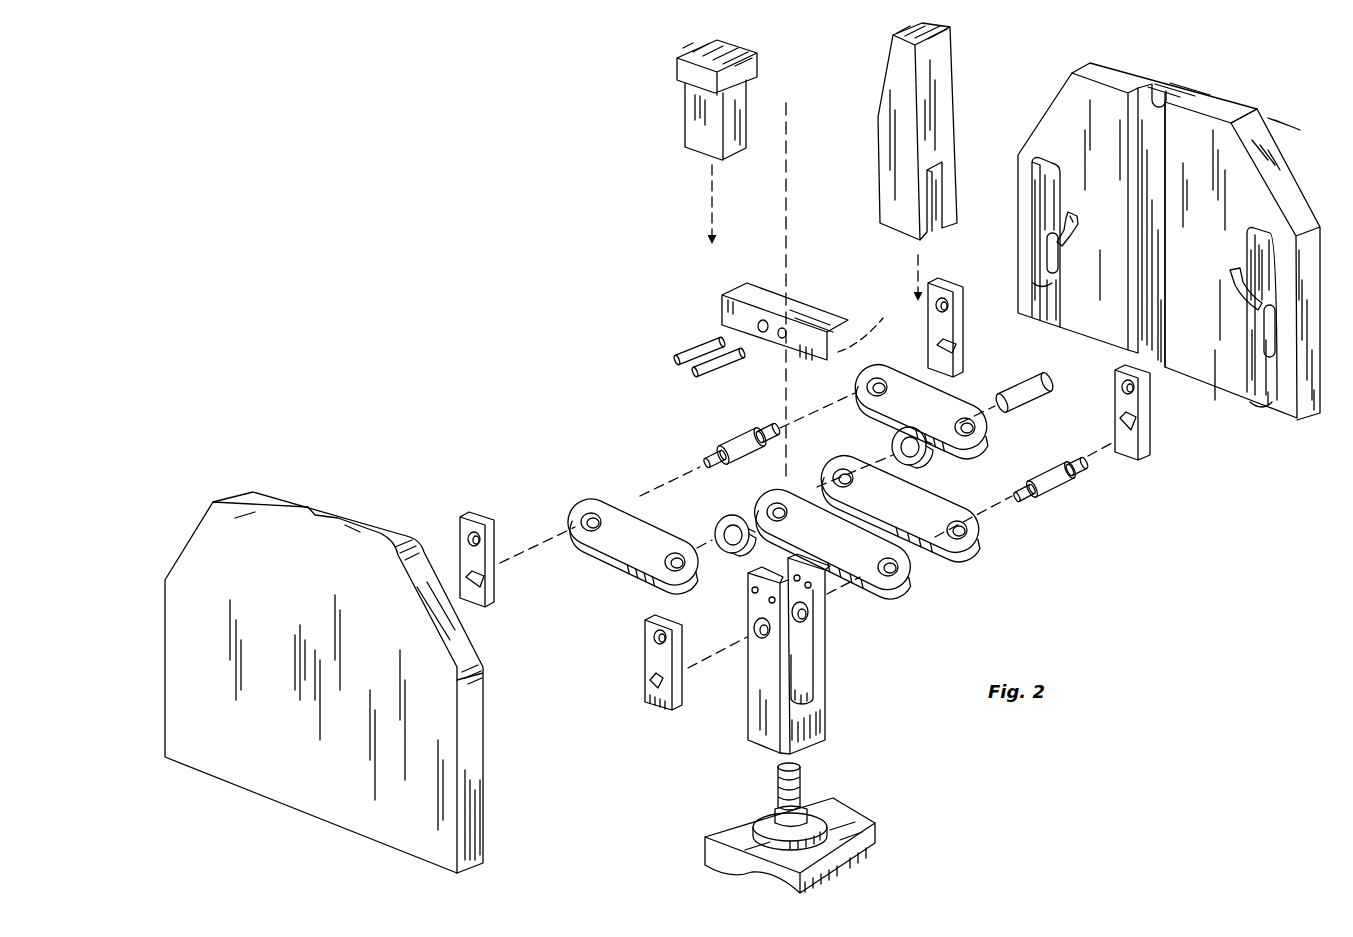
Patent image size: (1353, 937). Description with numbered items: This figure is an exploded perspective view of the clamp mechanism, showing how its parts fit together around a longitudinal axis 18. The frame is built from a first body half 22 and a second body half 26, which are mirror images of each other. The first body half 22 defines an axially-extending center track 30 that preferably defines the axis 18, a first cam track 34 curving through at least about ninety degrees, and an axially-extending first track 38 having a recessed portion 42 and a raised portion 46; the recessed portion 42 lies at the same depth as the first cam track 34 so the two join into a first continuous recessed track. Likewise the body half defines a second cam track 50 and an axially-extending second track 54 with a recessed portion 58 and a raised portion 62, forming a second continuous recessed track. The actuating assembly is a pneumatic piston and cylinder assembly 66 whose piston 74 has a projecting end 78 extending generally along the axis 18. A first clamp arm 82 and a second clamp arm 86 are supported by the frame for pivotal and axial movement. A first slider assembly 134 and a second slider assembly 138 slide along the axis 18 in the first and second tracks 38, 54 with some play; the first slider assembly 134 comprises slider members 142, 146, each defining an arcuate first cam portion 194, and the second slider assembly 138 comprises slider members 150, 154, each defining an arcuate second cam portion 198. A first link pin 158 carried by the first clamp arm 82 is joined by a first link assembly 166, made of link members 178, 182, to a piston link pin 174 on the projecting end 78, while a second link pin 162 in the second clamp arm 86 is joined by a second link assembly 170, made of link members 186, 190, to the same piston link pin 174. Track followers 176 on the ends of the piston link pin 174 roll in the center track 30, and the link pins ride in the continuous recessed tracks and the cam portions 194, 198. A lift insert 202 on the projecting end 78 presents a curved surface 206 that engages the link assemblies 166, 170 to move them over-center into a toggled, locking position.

The longitudinal axis 18 is at (783, 186).
The first body half 22 is at (1272, 148).
The second body half 26 is at (278, 530).
The center track 30 is at (1158, 103).
The first cam track 34 is at (1230, 277).
The first track 38 is at (1267, 392).
The recessed portion 42 is at (1274, 343).
The raised portion 46 is at (1257, 250).
The second cam track 50 is at (1108, 200).
The second track 54 is at (1033, 178).
The recessed portion 58 is at (1048, 247).
The raised portion 62 is at (1047, 278).
The piston and cylinder assembly 66 is at (886, 831).
The piston 74 is at (803, 806).
The projecting end 78 is at (802, 768).
The first clamp arm 82 is at (942, 73).
The second clamp arm 86 is at (688, 107).
The first slider assembly 134 is at (1119, 471).
The second slider assembly 138 is at (496, 500).
The slider member 142 is at (1148, 406).
The slider member 146 is at (647, 647).
The slider member 150 is at (957, 310).
The slider member 154 is at (460, 523).
The first link pin 158 is at (1050, 472).
The second link pin 162 is at (746, 432).
The first link assembly 166 is at (960, 566).
The second link assembly 170 is at (846, 385).
The piston link pin 174 is at (1040, 378).
The track followers 176 is at (929, 462).
The link member 178 is at (915, 515).
The link member 182 is at (851, 551).
The link member 186 is at (935, 416).
The link member 190 is at (651, 550).
The first cam portion 194 is at (1118, 415).
The second cam portion 198 is at (480, 578).
The lift insert 202 is at (727, 307).
The curved surface 206 is at (870, 335).